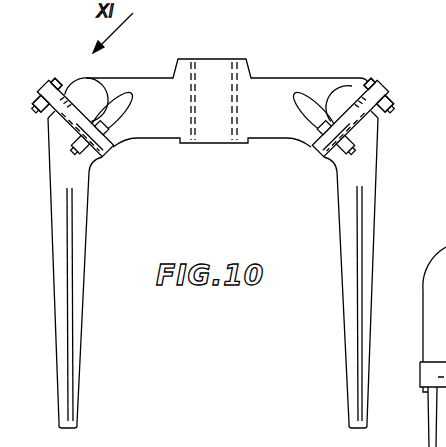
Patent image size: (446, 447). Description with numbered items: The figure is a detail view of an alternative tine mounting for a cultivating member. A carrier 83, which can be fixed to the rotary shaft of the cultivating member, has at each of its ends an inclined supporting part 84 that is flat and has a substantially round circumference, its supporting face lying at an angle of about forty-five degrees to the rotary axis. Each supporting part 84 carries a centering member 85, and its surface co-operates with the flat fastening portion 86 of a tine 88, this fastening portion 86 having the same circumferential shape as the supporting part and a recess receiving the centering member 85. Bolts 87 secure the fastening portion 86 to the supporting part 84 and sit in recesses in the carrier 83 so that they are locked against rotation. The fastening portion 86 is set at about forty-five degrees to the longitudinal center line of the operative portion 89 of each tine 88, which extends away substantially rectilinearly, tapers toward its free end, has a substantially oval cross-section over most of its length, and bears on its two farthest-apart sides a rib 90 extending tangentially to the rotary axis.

The carrier 83 is at (269, 80).
The supporting part 84 is at (106, 156).
The centering member 85 is at (50, 129).
The fastening portion 86 is at (97, 165).
The bolts 87 is at (79, 77).
The tine 88 is at (92, 238).
The operative portion 89 is at (81, 283).
The rib 90 is at (72, 326).